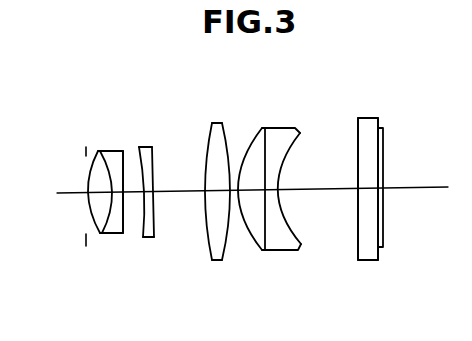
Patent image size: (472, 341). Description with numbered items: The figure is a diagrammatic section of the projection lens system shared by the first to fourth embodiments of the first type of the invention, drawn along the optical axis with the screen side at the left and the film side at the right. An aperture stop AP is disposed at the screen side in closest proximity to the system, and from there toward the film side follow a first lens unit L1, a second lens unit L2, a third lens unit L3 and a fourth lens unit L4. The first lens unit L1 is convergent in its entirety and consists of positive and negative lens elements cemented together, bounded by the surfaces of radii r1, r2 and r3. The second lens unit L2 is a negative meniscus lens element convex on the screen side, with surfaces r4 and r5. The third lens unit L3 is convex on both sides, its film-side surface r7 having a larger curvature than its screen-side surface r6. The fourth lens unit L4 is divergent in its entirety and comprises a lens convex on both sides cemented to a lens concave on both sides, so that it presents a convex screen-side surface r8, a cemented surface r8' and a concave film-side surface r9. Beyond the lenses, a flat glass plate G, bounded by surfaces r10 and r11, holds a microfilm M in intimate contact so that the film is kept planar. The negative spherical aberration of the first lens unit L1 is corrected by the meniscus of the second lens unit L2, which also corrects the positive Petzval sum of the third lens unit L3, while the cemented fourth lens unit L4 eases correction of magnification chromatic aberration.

The aperture stop AP is at (88, 242).
The first lens unit L1 is at (95, 198).
The second lens unit L2 is at (162, 198).
The third lens unit L3 is at (218, 197).
The fourth lens unit L4 is at (283, 188).
The radius of curvature r1 is at (93, 176).
The radius of curvature r2 is at (112, 150).
The radius of curvature r3 is at (125, 151).
The radius of curvature r4 is at (139, 147).
The radius of curvature r5 is at (152, 170).
The radius of curvature r6 is at (211, 130).
The radius of curvature r7 is at (222, 132).
The radius of curvature r8 is at (256, 160).
The radius of curvature r8' is at (289, 170).
The radius of curvature r9 is at (294, 140).
The radius of curvature r10 is at (358, 128).
The radius of curvature r11 is at (382, 122).
The flat glass plate G is at (382, 200).
The microfilm M is at (383, 239).